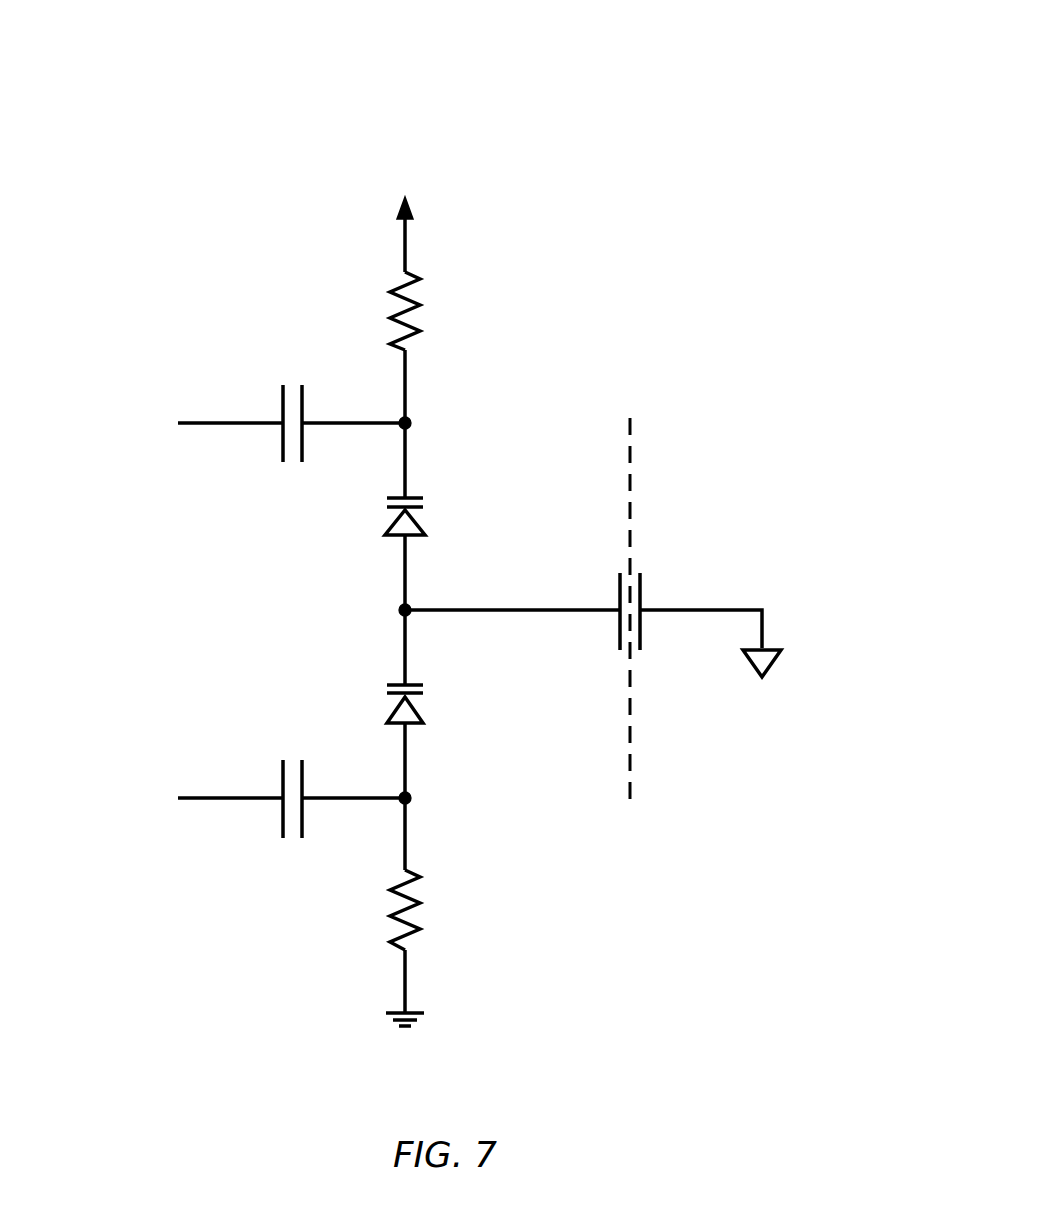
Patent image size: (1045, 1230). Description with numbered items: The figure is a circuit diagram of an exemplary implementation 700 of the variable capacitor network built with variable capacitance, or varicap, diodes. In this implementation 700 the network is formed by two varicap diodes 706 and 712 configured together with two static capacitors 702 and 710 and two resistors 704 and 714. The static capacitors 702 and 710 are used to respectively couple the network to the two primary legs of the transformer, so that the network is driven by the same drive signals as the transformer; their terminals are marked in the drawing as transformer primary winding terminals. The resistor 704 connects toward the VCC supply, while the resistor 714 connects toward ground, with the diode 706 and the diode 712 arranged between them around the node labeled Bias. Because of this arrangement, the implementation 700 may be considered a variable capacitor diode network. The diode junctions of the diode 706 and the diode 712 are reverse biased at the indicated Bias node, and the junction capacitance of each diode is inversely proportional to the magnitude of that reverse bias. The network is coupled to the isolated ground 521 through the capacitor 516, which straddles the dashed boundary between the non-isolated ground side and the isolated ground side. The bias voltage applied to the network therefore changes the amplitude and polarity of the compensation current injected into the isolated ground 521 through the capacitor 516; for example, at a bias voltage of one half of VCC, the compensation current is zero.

The implementation of the variable capacitor network 700 is at (627, 93).
The static capacitor 702 is at (288, 385).
The resistor 704 is at (418, 305).
The varicap diode 706 is at (392, 522).
The static capacitor 710 is at (290, 760).
The varicap diode 712 is at (423, 718).
The resistor 714 is at (418, 905).
The capacitor 516 is at (619, 587).
The isolated ground 521 is at (770, 658).